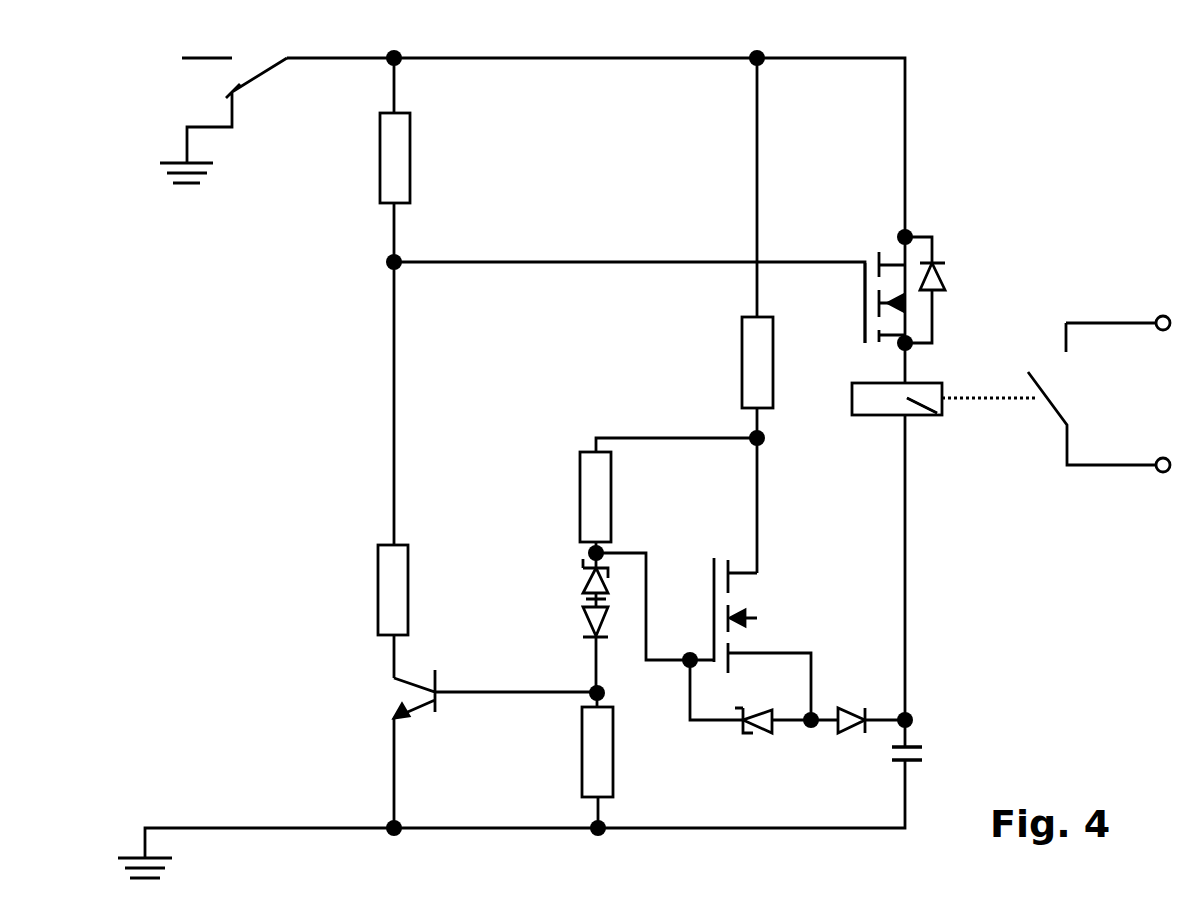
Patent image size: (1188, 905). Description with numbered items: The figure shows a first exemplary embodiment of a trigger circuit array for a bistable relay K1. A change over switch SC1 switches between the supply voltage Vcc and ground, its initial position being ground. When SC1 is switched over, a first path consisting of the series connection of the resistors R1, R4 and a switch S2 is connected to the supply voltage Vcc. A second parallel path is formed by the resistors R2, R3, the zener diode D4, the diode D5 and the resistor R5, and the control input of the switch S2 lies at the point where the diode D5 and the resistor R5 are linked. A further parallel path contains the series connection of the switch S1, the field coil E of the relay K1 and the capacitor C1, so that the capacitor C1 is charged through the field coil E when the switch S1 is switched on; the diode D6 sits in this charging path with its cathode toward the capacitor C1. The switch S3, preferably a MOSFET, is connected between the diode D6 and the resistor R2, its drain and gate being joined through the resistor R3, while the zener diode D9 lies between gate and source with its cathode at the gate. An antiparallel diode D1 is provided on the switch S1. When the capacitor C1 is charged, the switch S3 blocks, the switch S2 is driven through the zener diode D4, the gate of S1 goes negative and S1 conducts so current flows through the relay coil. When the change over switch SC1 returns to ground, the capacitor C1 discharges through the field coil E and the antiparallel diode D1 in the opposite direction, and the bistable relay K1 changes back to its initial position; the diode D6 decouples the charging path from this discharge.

The supply voltage Vcc is at (175, 54).
The change over switch SC1 is at (239, 120).
The resistor R1 is at (371, 158).
The resistor R2 is at (732, 362).
The resistor R3 is at (645, 495).
The resistor R4 is at (369, 590).
The resistor R5 is at (573, 760).
The antiparallel diode D1 is at (943, 290).
The zener diode D4 is at (571, 580).
The diode D5 is at (571, 649).
The diode D6 is at (858, 700).
The zener diode D9 is at (750, 722).
The switch S1 is at (862, 297).
The switch S2 is at (469, 701).
The switch S3 is at (703, 636).
The bistable relay K1 is at (989, 394).
The capacitor C1 is at (929, 759).
The field coil E is at (937, 413).